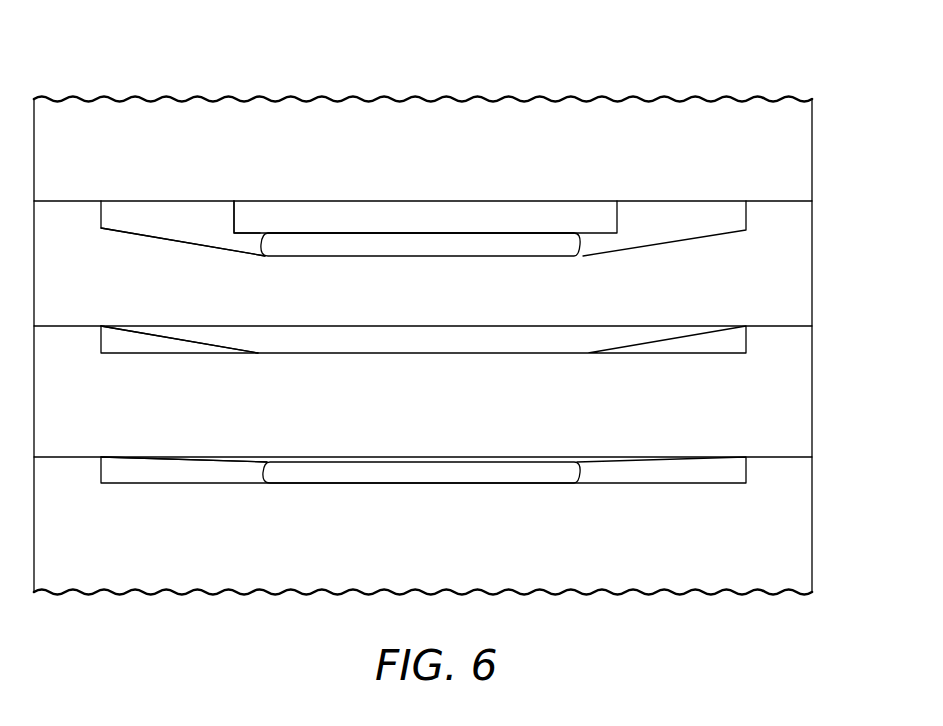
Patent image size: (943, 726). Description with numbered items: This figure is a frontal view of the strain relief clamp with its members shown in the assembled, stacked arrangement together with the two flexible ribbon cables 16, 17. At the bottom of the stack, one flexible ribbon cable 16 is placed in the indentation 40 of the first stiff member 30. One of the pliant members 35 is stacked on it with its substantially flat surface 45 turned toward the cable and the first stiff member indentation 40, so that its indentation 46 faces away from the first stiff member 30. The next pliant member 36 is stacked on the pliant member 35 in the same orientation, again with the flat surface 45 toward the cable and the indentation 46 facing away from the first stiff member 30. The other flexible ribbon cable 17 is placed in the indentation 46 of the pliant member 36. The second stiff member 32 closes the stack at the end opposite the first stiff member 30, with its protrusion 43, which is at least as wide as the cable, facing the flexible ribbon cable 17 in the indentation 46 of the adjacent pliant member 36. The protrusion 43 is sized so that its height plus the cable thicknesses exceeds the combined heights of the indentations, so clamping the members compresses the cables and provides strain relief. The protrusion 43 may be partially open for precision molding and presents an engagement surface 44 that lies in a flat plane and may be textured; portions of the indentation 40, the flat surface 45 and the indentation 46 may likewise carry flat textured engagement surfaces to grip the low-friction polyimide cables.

The flexible ribbon cable 16 is at (265, 472).
The flexible ribbon cable 17 is at (265, 243).
The first stiff member 30 is at (812, 530).
The second stiff member 32 is at (812, 160).
The pliant member 35 is at (812, 418).
The pliant member 36 is at (812, 278).
The indentation 40 is at (192, 486).
The protrusion 43 is at (233, 215).
The engagement surface 44 is at (402, 232).
The substantially flat surface 45 is at (132, 333).
The indentation 46 is at (148, 240).